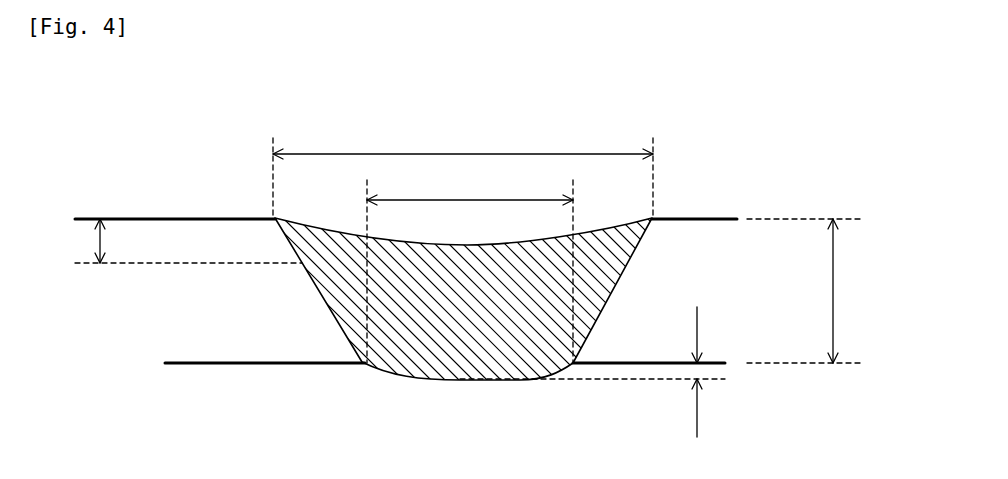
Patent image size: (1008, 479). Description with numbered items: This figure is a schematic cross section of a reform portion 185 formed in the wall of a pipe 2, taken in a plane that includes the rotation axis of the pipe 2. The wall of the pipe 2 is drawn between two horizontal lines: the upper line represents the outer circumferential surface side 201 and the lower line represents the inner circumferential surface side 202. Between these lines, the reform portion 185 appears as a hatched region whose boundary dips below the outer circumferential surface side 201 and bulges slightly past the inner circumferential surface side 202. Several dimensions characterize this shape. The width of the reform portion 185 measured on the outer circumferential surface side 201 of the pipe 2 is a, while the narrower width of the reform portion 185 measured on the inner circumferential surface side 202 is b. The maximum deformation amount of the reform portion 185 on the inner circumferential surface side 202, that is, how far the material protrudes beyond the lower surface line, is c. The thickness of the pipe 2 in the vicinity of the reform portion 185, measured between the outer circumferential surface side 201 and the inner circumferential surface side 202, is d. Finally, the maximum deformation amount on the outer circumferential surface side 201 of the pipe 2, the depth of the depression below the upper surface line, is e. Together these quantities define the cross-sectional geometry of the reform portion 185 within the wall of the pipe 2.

The pipe 2 is at (715, 188).
The reform portion 185 is at (468, 360).
The outer circumferential surface side 201 is at (208, 219).
The inner circumferential surface side 202 is at (215, 363).
The width of the reform portion on the outer circumferential surface side a is at (380, 154).
The width of the reform portion on the inner circumferential surface side b is at (465, 200).
The maximum deformation amount on the inner circumferential surface side c is at (697, 327).
The thickness in the vicinity of the reform portion d is at (833, 293).
The maximum deformation amount on the outer circumferential surface side e is at (96, 237).